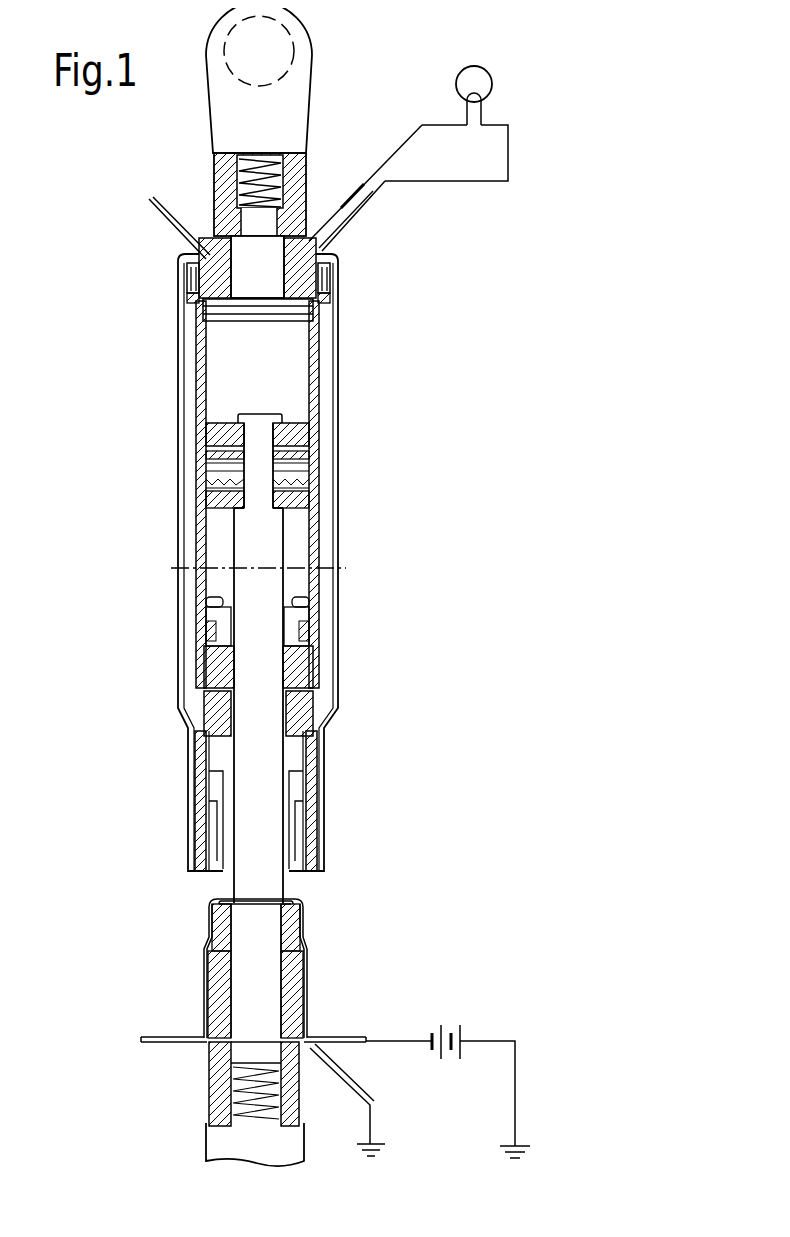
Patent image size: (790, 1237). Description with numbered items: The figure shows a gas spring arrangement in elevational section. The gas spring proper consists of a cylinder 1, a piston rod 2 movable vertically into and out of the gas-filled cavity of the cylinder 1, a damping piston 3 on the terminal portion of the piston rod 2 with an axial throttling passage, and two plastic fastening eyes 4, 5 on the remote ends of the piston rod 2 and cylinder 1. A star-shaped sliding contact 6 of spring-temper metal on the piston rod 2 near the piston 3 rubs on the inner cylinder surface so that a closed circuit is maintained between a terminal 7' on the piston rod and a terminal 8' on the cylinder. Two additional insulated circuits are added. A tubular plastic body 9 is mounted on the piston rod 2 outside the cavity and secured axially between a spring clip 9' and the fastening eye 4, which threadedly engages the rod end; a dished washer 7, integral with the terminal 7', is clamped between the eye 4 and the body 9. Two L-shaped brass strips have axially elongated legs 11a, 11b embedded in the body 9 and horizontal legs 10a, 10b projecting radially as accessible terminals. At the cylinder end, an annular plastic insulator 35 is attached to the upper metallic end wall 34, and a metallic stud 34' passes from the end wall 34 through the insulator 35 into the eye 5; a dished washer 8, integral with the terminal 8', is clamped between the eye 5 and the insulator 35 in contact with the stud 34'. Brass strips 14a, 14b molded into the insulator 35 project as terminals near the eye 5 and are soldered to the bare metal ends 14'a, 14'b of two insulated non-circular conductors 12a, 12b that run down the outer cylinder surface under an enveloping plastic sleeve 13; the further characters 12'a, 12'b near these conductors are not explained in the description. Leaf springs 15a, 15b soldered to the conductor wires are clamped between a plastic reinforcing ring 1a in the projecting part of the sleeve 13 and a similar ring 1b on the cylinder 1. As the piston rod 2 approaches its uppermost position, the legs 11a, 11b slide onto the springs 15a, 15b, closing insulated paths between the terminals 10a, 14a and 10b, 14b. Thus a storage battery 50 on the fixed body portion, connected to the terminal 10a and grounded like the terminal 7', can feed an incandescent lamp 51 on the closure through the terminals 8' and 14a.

The cylinder 1 is at (318, 372).
The reinforcing ring 1a is at (198, 785).
The cylindrical ring 1b is at (314, 740).
The piston rod 2 is at (265, 545).
The damping piston 3 is at (205, 424).
The fastening eye 4 is at (290, 1138).
The fastening eye 5 is at (304, 70).
The sliding contact 6 is at (205, 488).
The dished washer 7 is at (228, 1084).
The terminal 7' is at (350, 1100).
The dished washer 8 is at (227, 245).
The terminal 8' is at (365, 188).
The tubular plastic body 9 is at (269, 971).
The spring clip 9' is at (256, 879).
The horizontal leg 10a is at (362, 1036).
The horizontal leg 10b is at (152, 1041).
The axially elongated leg 11a is at (306, 964).
The axially elongated leg 11b is at (203, 987).
The insulated conductor 12a is at (322, 520).
The insulated conductor 12b is at (195, 602).
The insulating element 12'a is at (356, 302).
The insulating element 12'b is at (156, 300).
The plastic sleeve 13 is at (335, 398).
The brass strip 14a is at (372, 207).
The brass strip 14b is at (150, 204).
The bare metal end 14'a is at (355, 271).
The bare metal end 14'b is at (150, 267).
The leaf spring 15a is at (298, 868).
The leaf spring 15b is at (212, 868).
The end wall 34 is at (219, 333).
The metallic stud 34' is at (234, 192).
The annular plastic insulator 35 is at (290, 302).
The storage battery 50 is at (445, 1027).
The incandescent lamp 51 is at (455, 88).